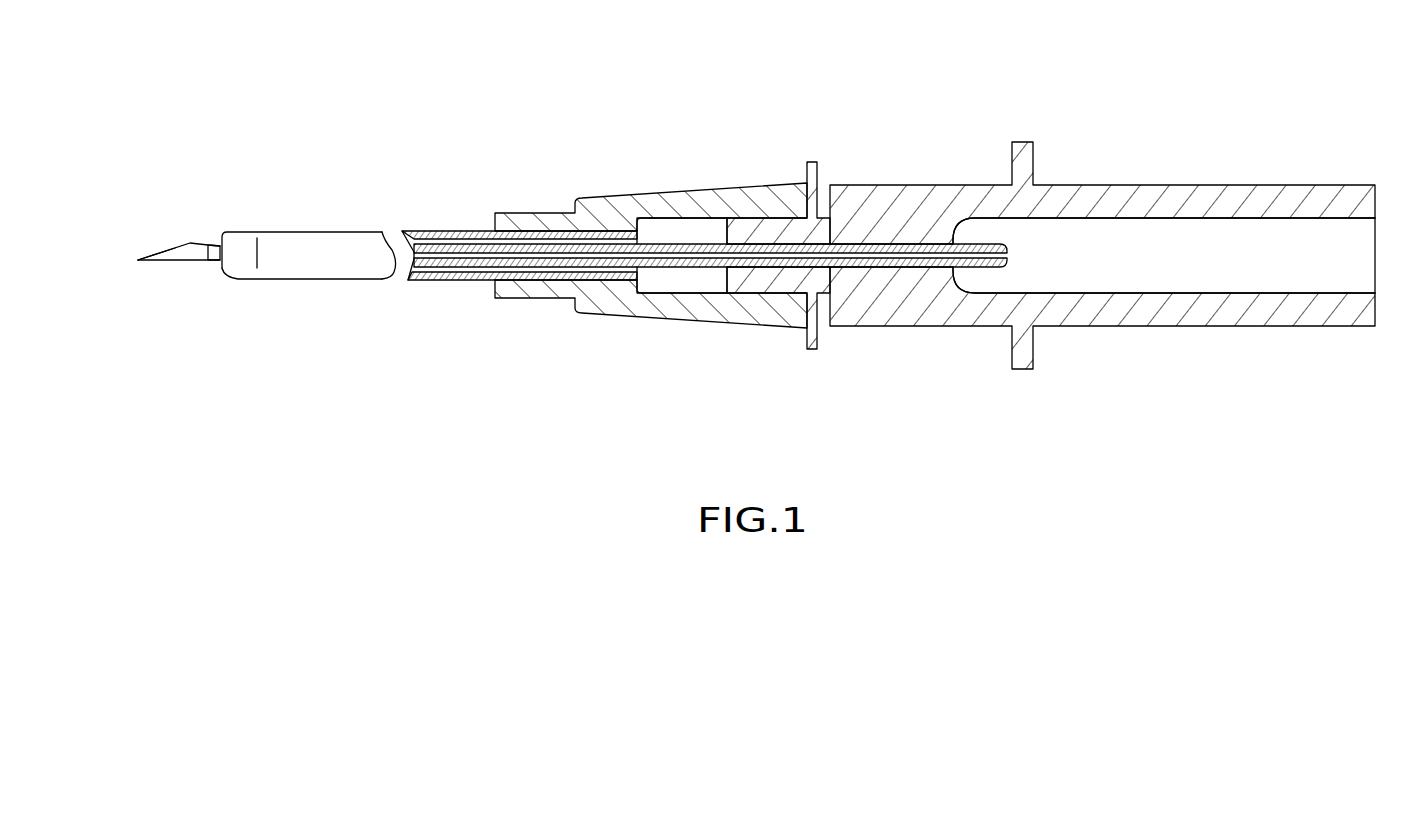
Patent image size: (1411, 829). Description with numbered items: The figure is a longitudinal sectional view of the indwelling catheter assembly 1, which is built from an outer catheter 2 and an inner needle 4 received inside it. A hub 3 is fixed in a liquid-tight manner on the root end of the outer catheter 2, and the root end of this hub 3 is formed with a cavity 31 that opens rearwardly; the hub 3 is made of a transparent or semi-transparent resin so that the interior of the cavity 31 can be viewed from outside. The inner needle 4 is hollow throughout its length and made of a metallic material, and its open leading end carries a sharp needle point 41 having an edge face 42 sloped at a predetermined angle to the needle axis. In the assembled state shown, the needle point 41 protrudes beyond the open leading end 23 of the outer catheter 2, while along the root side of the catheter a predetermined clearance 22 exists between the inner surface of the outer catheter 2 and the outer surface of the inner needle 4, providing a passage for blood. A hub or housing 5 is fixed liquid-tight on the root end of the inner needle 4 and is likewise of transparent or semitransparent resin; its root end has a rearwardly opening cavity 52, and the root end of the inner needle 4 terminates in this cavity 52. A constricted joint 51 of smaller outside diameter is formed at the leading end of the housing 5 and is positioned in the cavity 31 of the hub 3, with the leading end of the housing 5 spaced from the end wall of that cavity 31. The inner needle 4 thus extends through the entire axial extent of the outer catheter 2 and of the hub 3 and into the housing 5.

The indwelling catheter assembly 1 is at (1013, 92).
The outer catheter 2 is at (353, 247).
The open leading end of the outer catheter 23 is at (205, 247).
The needle point 41 is at (165, 261).
The edge face 42 is at (165, 253).
The clearance 22 is at (532, 248).
The inner needle 4 is at (447, 267).
The hub 3 is at (697, 302).
The cavity 31 is at (673, 227).
The constricted joint 51 is at (771, 284).
The housing 5 is at (1175, 308).
The cavity 52 is at (1150, 240).